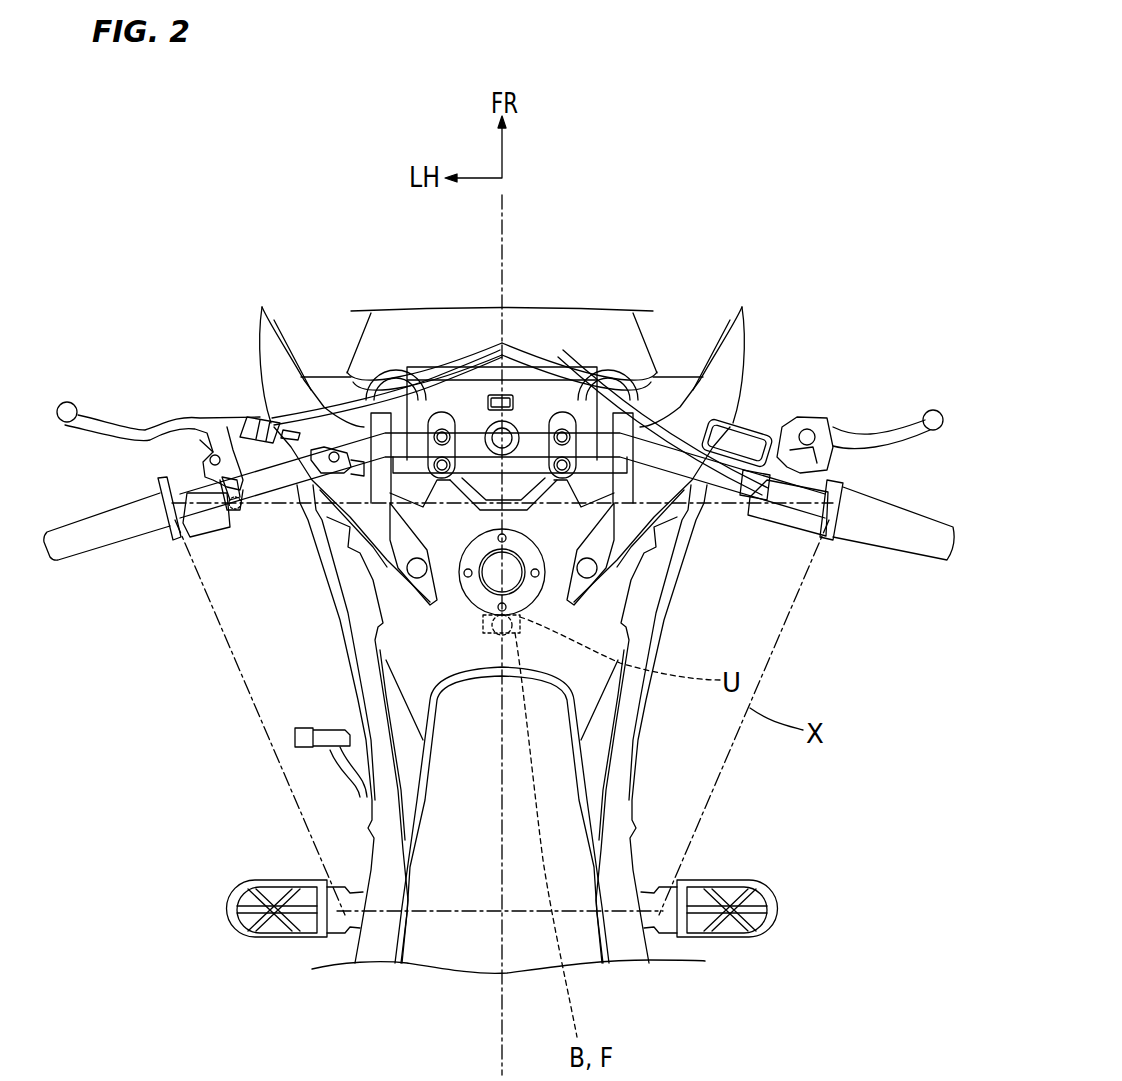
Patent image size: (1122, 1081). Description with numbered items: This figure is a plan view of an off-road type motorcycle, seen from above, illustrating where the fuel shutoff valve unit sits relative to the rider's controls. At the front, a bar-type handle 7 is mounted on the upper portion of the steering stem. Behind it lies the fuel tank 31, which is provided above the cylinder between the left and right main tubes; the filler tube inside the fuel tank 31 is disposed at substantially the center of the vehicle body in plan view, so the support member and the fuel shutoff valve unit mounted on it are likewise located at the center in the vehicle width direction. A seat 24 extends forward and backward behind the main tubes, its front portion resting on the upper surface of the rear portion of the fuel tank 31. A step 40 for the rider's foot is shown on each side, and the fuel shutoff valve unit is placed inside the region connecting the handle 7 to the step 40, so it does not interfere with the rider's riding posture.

The bar-type handle 7 is at (112, 535).
The seat 24 is at (560, 827).
The fuel tank 31 is at (473, 638).
The step 40 is at (233, 887).